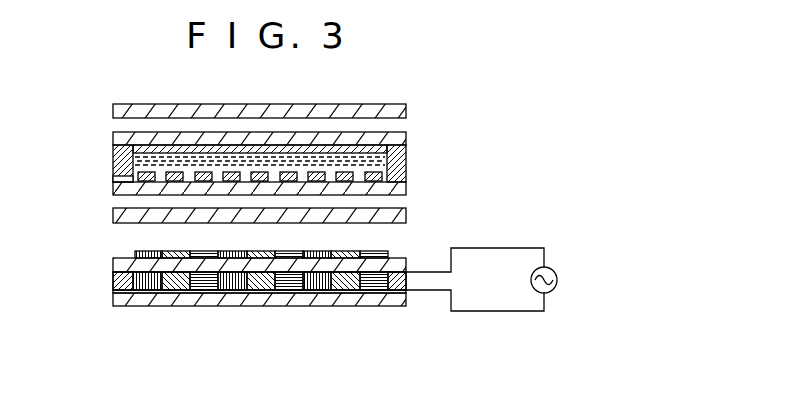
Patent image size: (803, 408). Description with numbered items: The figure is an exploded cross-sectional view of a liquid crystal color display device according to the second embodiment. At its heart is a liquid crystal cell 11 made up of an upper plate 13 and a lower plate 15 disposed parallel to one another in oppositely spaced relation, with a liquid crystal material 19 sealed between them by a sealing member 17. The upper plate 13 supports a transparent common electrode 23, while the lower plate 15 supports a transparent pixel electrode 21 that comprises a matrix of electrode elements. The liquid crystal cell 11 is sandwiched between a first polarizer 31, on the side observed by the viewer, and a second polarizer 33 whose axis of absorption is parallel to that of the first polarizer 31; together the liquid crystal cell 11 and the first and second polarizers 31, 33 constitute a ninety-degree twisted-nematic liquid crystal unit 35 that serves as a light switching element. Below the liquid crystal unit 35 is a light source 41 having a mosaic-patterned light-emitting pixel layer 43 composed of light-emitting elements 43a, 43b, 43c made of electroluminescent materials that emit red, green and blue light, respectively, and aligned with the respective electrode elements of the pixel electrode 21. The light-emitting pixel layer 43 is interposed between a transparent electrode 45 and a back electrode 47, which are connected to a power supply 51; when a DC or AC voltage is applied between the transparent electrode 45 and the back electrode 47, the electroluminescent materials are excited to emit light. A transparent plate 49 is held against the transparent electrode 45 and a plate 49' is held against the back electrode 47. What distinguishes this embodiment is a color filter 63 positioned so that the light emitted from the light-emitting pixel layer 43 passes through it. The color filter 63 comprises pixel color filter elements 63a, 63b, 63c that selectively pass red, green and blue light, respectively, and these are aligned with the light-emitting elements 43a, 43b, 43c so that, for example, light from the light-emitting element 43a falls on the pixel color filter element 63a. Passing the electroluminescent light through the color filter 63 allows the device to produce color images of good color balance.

The first polarizer 31 is at (406, 111).
The upper plate 13 is at (406, 140).
The transparent common electrode 23 is at (120, 143).
The sealing member 17 is at (113, 156).
The liquid crystal material 19 is at (406, 165).
The transparent pixel electrode 21 is at (130, 178).
The lower plate 15 is at (282, 190).
The liquid crystal cell 11 is at (283, 159).
The second polarizer 33 is at (406, 217).
The liquid crystal unit 35 is at (305, 162).
The color filter 63 is at (200, 228).
The pixel color filter element 63a is at (133, 253).
The pixel color filter element 63b is at (173, 251).
The pixel color filter element 63c is at (188, 252).
The light source 41 is at (211, 316).
The transparent plate 49 is at (231, 268).
The transparent electrode 45 is at (231, 323).
The back electrode 47 is at (113, 290).
The plate 49' is at (231, 318).
The light-emitting pixel layer 43 is at (258, 323).
The light-emitting element 43a is at (153, 288).
The light-emitting element 43b is at (180, 288).
The light-emitting element 43c is at (289, 307).
The power supply 51 is at (553, 290).